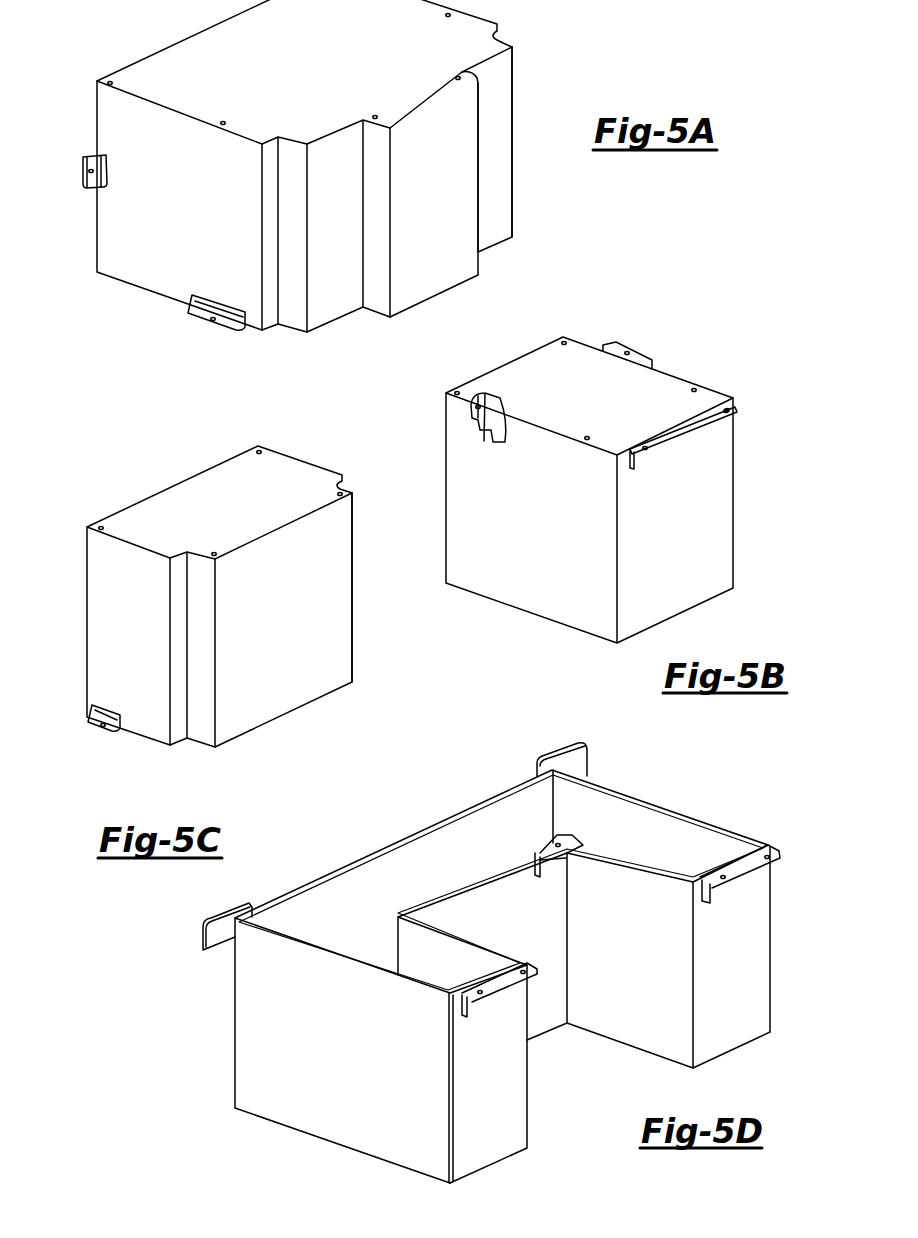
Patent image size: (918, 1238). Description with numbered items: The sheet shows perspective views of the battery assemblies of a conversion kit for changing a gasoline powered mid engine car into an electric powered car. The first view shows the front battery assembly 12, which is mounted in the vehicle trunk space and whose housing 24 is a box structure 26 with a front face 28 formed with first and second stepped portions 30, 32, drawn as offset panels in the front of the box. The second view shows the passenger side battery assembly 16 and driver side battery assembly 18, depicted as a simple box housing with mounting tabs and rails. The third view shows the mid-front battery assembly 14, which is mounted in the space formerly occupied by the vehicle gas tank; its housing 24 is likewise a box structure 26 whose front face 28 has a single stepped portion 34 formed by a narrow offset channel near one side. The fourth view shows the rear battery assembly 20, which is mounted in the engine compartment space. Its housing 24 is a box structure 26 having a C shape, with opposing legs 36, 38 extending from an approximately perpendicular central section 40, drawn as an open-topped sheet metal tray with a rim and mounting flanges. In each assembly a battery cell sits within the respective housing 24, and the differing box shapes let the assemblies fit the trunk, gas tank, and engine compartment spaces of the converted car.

In FIG. 5A, the front battery assembly 12 is at (313, 184).
In FIG. 5C, the mid-front battery assembly 14 is at (219, 615).
In FIG. 5B, the passenger side battery assembly 16 is at (624, 490).
In FIG. 5B, the driver side battery assembly 18 is at (723, 502).
In FIG. 5D, the rear battery assembly 20 is at (512, 978).
In FIG. 5A, the housing 24 is at (505, 240).
In FIG. 5C, the housing 24 is at (332, 692).
In FIG. 5A, the box structure 26 is at (143, 265).
In FIG. 5C, the box structure 26 is at (103, 663).
In FIG. 5D, the box structure 26 is at (280, 1100).
In FIG. 5A, the front face 28 is at (433, 275).
In FIG. 5C, the front face 28 is at (247, 710).
In FIG. 5A, the first stepped portion 30 is at (292, 330).
In FIG. 5A, the second stepped portion 32 is at (363, 312).
In FIG. 5C, the stepped portion 34 is at (202, 746).
In FIG. 5D, the leg 36 is at (770, 990).
In FIG. 5D, the leg 38 is at (407, 1170).
In FIG. 5D, the central section 40 is at (480, 825).